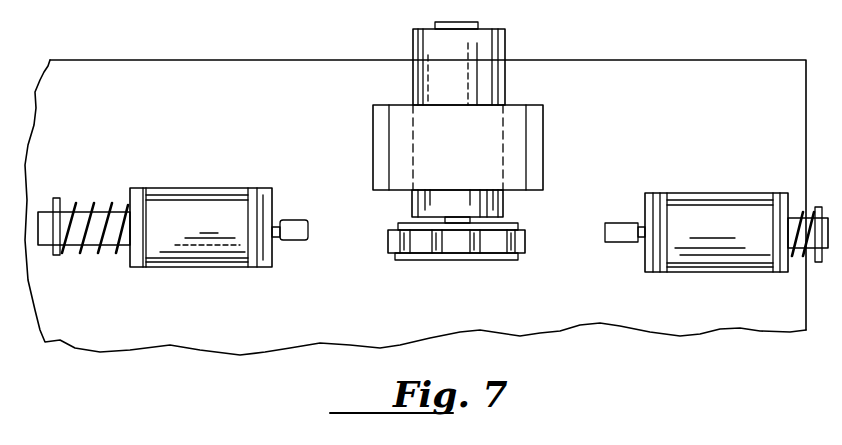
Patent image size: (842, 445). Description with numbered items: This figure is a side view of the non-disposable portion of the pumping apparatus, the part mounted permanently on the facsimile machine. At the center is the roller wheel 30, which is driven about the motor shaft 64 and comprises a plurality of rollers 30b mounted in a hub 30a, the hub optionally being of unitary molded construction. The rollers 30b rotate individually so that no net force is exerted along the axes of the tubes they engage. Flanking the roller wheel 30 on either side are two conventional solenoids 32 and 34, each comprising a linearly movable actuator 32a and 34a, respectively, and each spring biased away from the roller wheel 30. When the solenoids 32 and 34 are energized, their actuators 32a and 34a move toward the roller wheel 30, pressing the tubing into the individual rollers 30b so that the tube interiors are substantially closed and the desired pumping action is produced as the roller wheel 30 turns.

The drive shaft 64 is at (492, 48).
The roller wheel 30 is at (498, 258).
The hub 30a is at (415, 258).
The rollers 30b is at (460, 245).
The solenoid 32 is at (187, 210).
The linearly movable actuator 32a is at (293, 225).
The solenoid 34 is at (705, 208).
The linearly movable actuator 34a is at (618, 227).